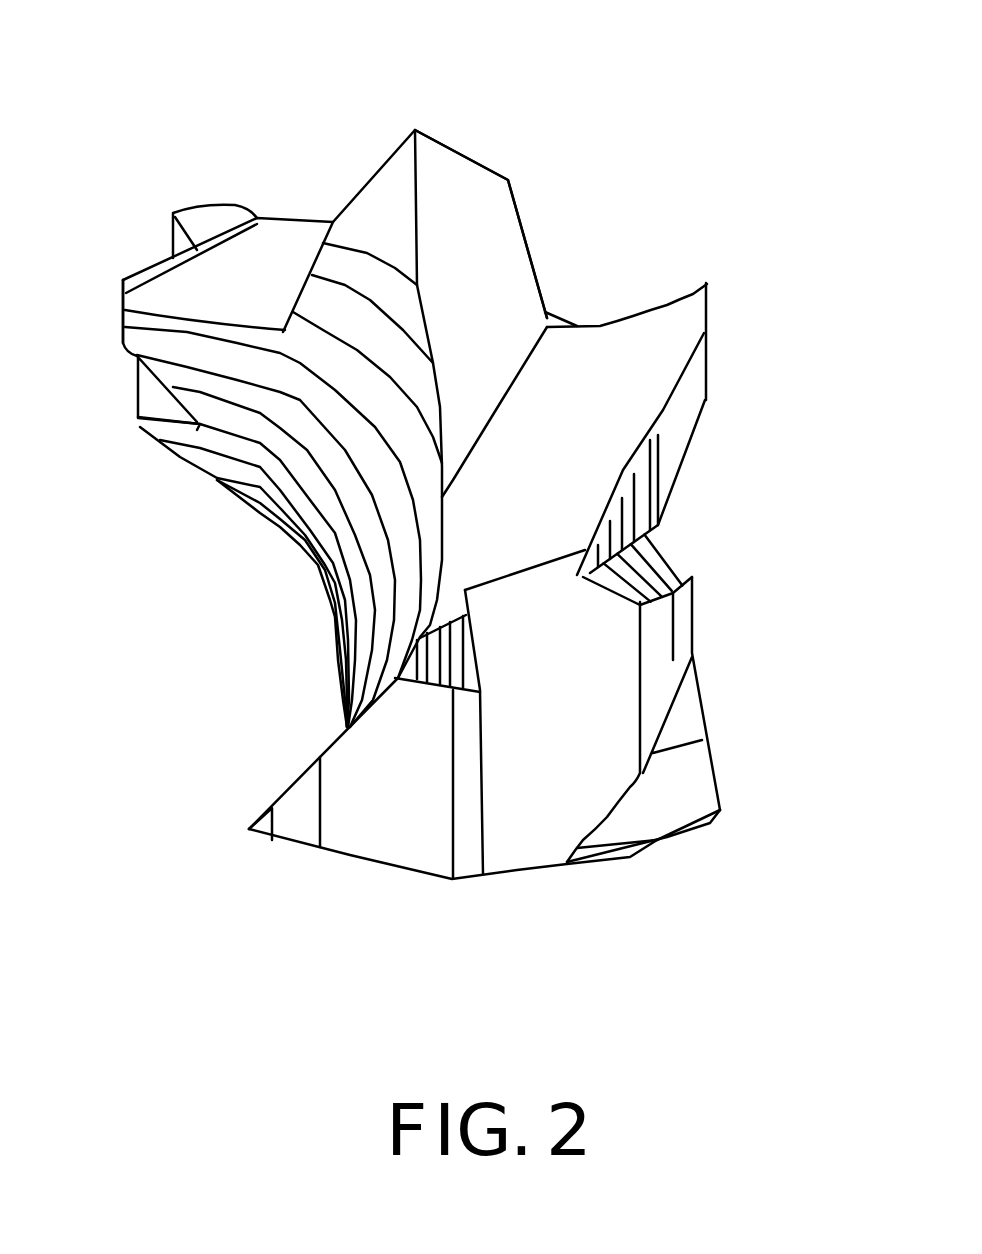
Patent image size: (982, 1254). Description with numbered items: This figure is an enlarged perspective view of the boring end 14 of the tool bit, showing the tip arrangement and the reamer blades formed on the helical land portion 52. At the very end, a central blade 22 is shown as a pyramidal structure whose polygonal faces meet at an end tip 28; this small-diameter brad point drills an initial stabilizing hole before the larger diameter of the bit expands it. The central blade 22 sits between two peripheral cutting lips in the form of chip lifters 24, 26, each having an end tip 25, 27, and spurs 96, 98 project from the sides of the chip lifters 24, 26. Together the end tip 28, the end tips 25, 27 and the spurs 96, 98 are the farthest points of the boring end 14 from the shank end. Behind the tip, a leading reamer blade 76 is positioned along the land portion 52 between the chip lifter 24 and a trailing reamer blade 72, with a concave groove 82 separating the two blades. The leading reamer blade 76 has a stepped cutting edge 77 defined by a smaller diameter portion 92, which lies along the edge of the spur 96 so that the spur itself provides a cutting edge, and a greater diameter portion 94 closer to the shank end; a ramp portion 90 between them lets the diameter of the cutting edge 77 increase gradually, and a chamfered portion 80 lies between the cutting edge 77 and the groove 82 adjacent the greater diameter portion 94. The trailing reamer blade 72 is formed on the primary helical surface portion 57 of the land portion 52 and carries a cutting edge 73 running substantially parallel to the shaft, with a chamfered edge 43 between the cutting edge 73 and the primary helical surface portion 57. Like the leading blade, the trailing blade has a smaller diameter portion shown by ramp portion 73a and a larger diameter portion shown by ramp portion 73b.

The boring end 14 is at (437, 504).
The central blade 22 is at (445, 187).
The chip lifter 24 is at (687, 323).
The end tip 25 is at (707, 284).
The chip lifter 26 is at (155, 295).
The end tip 27 is at (123, 278).
The end tip 28 is at (410, 124).
The spur 98 is at (198, 215).
The spur 96 is at (658, 435).
The cutting edge 77 is at (658, 452).
The smaller diameter portion 92 is at (665, 477).
The ramp portion 90 is at (673, 540).
The greater diameter portion 94 is at (697, 593).
The chamfered portion 80 is at (680, 647).
The leading reamer blade 76 is at (655, 685).
The concave groove 82 is at (560, 618).
The ramp portion 73a is at (480, 647).
The ramp portion 73b is at (487, 725).
The cutting edge 73 is at (487, 803).
The trailing reamer blade 72 is at (463, 777).
The chamfered edge 43 is at (467, 848).
The primary helical surface portion 57 is at (350, 823).
The land portion 52 is at (290, 822).